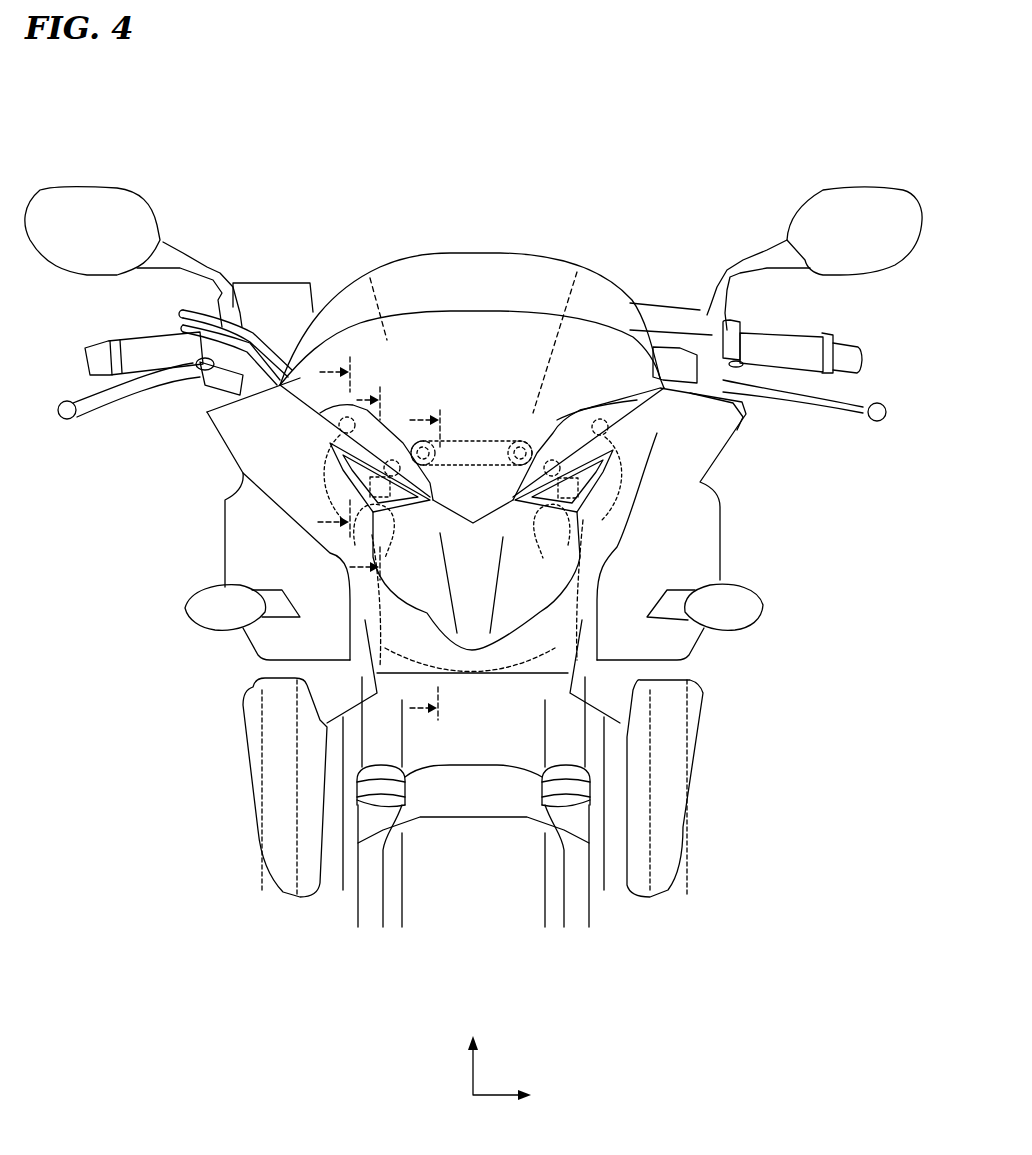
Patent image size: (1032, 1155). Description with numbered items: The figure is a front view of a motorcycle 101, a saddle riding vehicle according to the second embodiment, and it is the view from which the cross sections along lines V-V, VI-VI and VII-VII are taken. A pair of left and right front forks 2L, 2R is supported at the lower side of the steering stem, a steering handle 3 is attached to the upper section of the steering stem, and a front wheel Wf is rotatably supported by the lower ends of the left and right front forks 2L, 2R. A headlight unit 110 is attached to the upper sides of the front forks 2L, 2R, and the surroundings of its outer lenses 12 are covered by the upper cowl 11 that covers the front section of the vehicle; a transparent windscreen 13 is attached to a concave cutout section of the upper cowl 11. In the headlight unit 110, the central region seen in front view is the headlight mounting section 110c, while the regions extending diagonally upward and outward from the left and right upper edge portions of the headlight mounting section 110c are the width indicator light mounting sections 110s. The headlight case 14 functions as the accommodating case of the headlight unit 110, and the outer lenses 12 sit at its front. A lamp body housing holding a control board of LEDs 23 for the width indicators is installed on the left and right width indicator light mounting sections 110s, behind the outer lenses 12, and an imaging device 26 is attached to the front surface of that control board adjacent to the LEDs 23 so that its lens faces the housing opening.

The motorcycle 101 is at (670, 148).
The windscreen 13 is at (462, 278).
The steering handle 3 is at (773, 341).
The upper cowl 11 is at (713, 433).
The LEDs for width indicators 23 is at (360, 485).
The imaging device 26 is at (555, 455).
The headlight unit 110 is at (582, 563).
The width indicator light mounting sections 110s is at (372, 492).
The headlight mounting section 110c is at (432, 643).
The outer lenses 12 is at (597, 793).
The headlight case 14 is at (573, 660).
The right front fork 2R is at (378, 748).
The left front fork 2L is at (570, 742).
The front wheel Wf is at (453, 860).